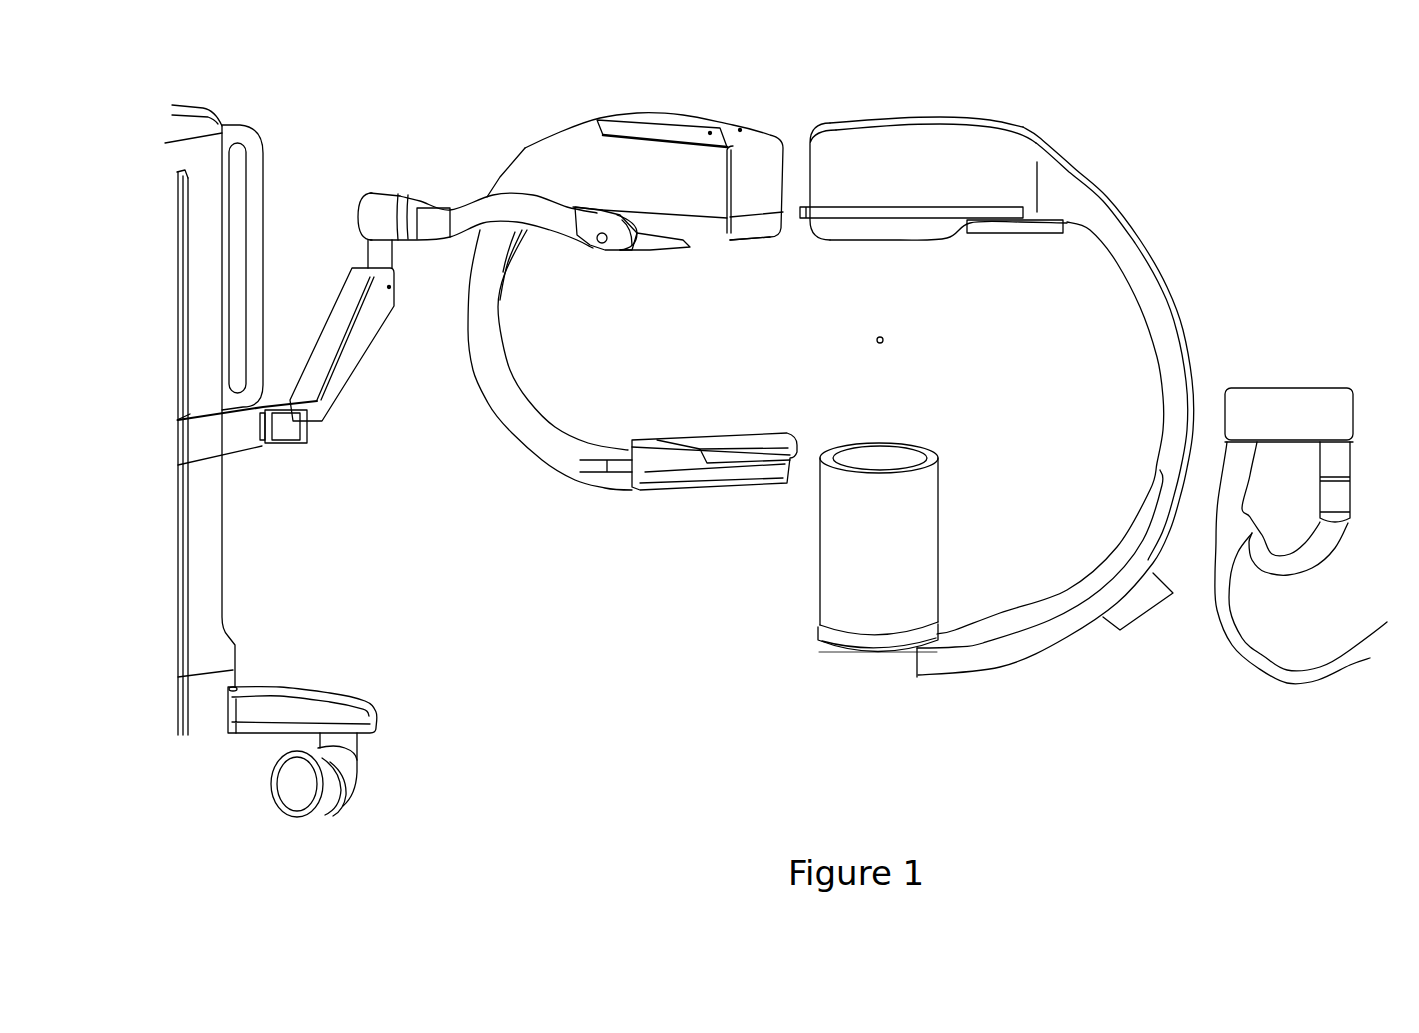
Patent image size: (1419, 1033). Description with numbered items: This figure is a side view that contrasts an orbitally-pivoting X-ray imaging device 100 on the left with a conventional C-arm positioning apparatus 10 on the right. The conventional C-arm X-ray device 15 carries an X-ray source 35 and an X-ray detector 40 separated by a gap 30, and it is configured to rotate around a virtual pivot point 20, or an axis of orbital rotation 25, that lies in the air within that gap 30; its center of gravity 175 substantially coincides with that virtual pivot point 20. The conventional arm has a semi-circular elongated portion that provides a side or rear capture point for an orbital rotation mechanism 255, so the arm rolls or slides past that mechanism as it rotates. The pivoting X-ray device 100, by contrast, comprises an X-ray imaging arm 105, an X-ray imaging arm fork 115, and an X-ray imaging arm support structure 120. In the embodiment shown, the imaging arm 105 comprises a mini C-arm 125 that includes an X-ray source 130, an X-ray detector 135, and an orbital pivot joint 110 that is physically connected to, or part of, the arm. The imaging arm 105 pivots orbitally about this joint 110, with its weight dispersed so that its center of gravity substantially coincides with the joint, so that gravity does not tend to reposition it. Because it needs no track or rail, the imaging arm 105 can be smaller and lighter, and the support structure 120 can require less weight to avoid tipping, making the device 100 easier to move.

The conventional C-arm positioning apparatus 10 is at (1170, 200).
The conventional C-arm X-ray device 15 is at (797, 676).
The virtual pivot point 20 is at (882, 337).
The axis of orbital rotation 25 is at (882, 343).
The gap 30 is at (862, 413).
The X-ray source 35 is at (940, 222).
The X-ray detector 40 is at (832, 572).
The orbitally-pivoting X-ray imaging device 100 is at (553, 82).
The X-ray imaging arm 105 is at (688, 165).
The orbital pivot joint 110 is at (599, 252).
The X-ray imaging arm fork 115 is at (480, 188).
The X-ray imaging arm support structure 120 is at (372, 676).
The mini C-arm 125 is at (507, 412).
The X-ray source 130 is at (732, 252).
The X-ray detector 135 is at (747, 426).
The center of gravity 175 is at (877, 340).
The orbital rotation mechanism 255 is at (1152, 636).